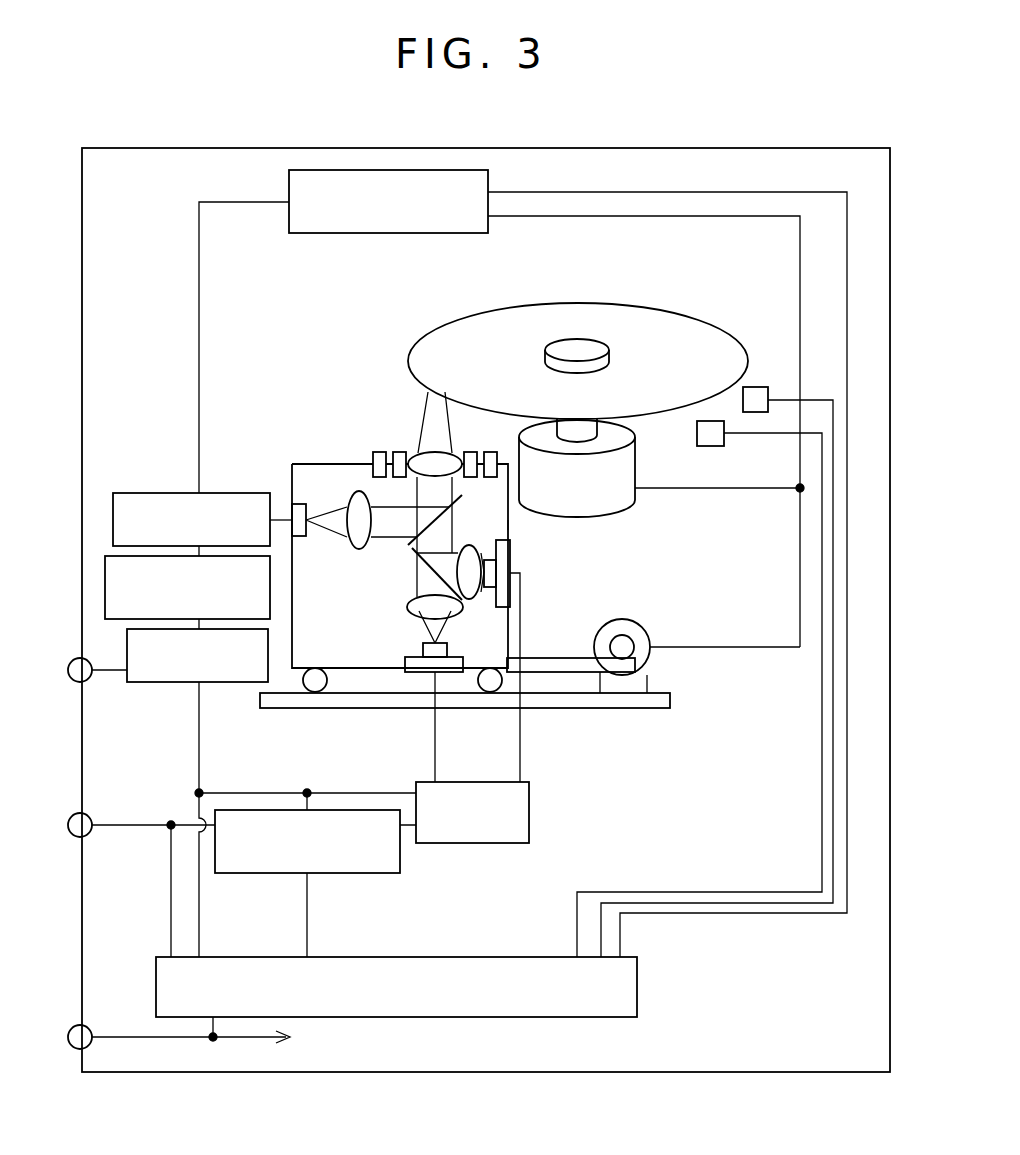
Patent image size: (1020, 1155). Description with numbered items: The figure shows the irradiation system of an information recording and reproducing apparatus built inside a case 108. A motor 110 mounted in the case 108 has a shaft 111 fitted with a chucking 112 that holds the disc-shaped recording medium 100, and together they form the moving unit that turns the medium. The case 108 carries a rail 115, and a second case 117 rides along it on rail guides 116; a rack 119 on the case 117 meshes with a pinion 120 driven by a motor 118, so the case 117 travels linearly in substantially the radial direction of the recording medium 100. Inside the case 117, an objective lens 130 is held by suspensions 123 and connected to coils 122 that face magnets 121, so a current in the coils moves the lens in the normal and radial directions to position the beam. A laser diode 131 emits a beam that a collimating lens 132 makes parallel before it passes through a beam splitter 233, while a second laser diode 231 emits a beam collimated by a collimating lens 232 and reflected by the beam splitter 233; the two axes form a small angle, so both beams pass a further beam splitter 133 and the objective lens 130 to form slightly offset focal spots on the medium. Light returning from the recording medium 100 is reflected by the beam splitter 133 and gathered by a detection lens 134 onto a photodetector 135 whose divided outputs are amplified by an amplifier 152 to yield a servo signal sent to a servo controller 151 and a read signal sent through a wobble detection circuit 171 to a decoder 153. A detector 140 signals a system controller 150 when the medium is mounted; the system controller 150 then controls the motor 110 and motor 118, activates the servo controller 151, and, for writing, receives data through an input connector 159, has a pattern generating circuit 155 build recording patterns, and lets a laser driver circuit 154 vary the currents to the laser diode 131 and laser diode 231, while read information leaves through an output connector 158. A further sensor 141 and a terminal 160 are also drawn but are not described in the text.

The recording medium 100 is at (567, 317).
The case 108 is at (820, 1070).
The motor 110 is at (615, 497).
The shaft 111 is at (585, 432).
The chucking 112 is at (588, 347).
The rail 115 is at (670, 697).
The rail guides 116 is at (312, 692).
The case 117 is at (510, 525).
The motor 118 is at (645, 633).
The rack 119 is at (570, 667).
The pinion 120 is at (623, 638).
The magnets 121 is at (378, 452).
The coils 122 is at (399, 452).
The suspensions 123 is at (391, 452).
The objective lens 130 is at (436, 463).
The laser diode 131 is at (423, 650).
The collimating lens 132 is at (408, 605).
The beam splitter 133 is at (510, 486).
The detection lens 134 is at (355, 548).
The photodetector 135 is at (292, 498).
The detector 140 is at (710, 438).
The sensor 141 is at (760, 387).
The system controller 150 is at (639, 985).
The servo controller 151 is at (302, 235).
The amplifier 152 is at (152, 492).
The decoder 153 is at (227, 683).
The laser driver circuit 154 is at (472, 845).
The pattern generating circuit 155 is at (245, 875).
The output connector 158 is at (92, 677).
The input connector 159 is at (90, 837).
The output terminal 160 is at (90, 1030).
The wobble detection circuit 171 is at (270, 592).
The laser diode 231 is at (513, 570).
The collimating lens 232 is at (512, 628).
The beam splitter 233 is at (425, 567).